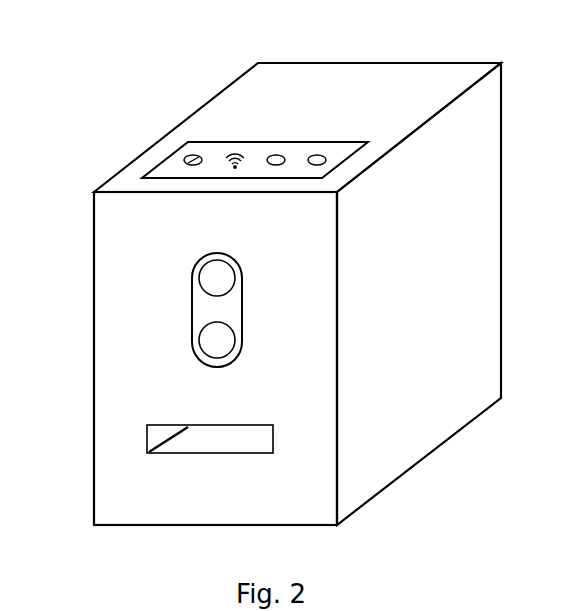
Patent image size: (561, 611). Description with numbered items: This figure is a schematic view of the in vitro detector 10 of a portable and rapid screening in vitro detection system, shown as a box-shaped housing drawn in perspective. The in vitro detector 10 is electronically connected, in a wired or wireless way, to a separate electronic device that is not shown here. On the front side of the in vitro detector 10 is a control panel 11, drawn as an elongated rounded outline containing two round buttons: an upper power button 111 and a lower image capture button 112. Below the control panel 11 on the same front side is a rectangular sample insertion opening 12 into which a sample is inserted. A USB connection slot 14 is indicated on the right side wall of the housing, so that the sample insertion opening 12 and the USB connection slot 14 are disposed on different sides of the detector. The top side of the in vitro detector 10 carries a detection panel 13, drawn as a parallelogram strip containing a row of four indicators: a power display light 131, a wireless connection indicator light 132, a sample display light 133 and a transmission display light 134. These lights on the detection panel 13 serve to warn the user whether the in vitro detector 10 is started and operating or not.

The in vitro detector 10 is at (60, 41).
The control panel 11 is at (176, 317).
The power button 111 is at (212, 275).
The image capture button 112 is at (210, 346).
The sample insertion opening 12 is at (190, 440).
The detection panel 13 is at (282, 135).
The power display light 131 is at (184, 157).
The wireless connection indicator light 132 is at (230, 152).
The sample display light 133 is at (278, 154).
The transmission display light 134 is at (322, 153).
The USB connection slot 14 is at (497, 332).